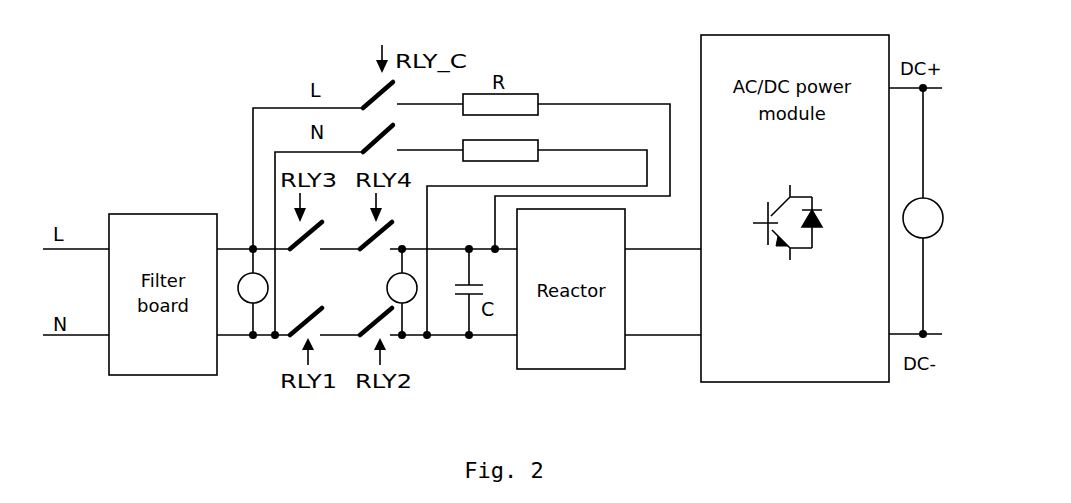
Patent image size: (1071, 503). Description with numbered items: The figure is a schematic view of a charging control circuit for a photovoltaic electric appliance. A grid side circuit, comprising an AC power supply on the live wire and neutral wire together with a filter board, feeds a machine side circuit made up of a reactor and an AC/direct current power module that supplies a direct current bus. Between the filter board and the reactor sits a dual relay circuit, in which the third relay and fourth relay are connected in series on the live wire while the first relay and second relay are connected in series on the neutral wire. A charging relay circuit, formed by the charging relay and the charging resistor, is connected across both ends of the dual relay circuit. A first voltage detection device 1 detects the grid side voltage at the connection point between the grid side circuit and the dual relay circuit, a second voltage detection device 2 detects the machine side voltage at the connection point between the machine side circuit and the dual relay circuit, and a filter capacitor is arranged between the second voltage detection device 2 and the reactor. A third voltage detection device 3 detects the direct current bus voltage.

The first voltage detection device 1 is at (246, 292).
The second voltage detection device 2 is at (392, 292).
The third voltage detection device 3 is at (928, 211).